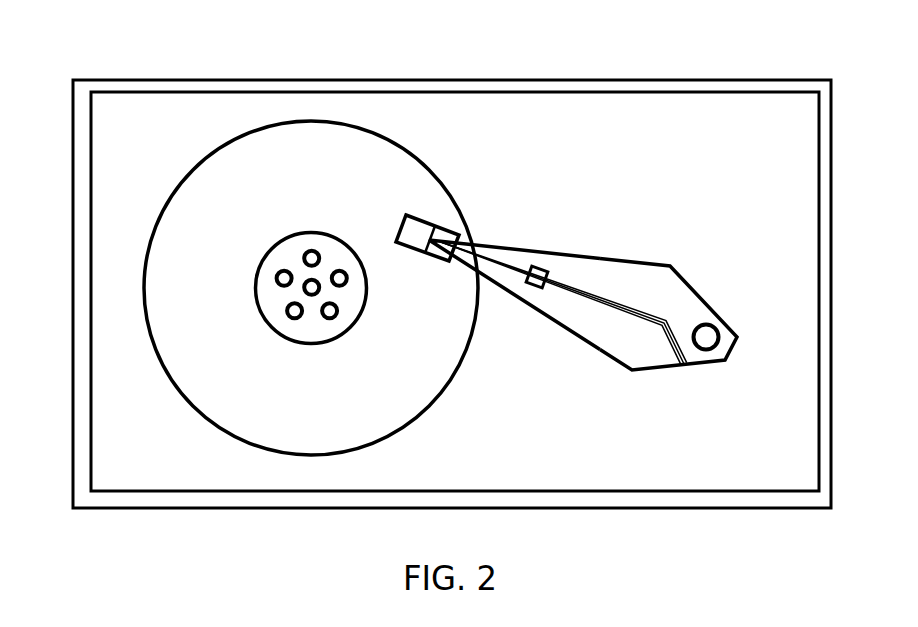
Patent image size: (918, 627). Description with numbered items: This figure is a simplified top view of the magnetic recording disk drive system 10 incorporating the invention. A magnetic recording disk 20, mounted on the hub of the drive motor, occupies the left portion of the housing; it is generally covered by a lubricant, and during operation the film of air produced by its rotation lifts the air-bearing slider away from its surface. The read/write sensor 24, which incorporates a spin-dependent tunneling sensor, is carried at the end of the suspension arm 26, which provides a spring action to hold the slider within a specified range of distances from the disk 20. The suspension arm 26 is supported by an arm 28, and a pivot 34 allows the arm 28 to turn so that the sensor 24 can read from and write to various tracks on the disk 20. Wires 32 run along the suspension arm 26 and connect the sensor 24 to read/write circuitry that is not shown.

The magnetic recording disk drive system 10 is at (452, 328).
The magnetic recording disk 20 is at (311, 237).
The read/write sensor 24 is at (427, 140).
The suspension arm 26 is at (514, 184).
The arm 28 is at (668, 194).
The wires 32 is at (564, 192).
The pivot 34 is at (707, 184).